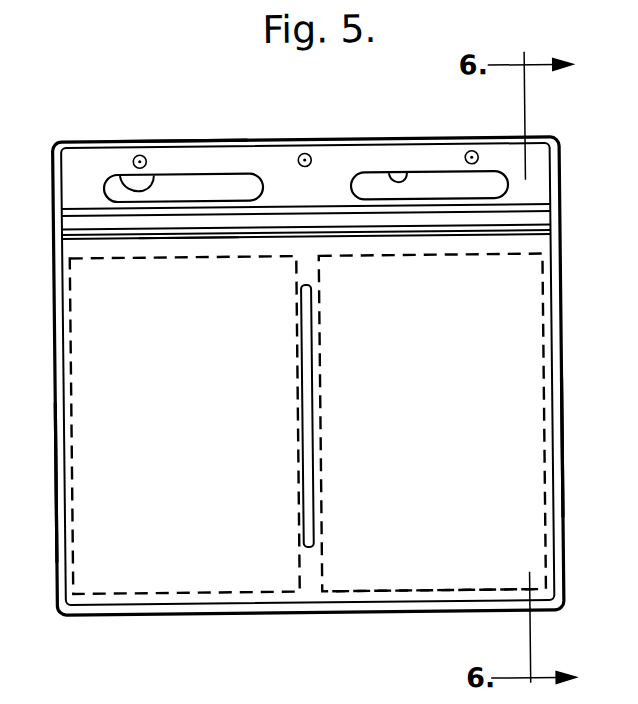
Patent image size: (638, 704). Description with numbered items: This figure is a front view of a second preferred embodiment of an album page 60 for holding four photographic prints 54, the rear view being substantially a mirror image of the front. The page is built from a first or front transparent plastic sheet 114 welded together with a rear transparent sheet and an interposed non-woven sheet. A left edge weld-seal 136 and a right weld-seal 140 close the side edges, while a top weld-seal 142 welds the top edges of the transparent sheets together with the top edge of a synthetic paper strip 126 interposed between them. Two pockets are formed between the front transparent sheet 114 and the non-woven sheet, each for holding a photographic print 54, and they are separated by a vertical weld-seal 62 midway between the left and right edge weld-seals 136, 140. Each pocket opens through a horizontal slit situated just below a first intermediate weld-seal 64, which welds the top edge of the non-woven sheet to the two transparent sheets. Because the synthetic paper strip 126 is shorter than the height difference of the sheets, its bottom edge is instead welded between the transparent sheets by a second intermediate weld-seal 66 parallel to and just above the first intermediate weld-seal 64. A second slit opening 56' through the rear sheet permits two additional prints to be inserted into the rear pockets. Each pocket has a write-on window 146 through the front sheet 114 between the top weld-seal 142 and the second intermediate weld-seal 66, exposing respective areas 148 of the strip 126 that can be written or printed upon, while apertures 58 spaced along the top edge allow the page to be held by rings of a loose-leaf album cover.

The photographic print 54 is at (72, 406).
The second slit opening 56' is at (189, 271).
The apertures 58 is at (145, 153).
The album page 60 is at (570, 164).
The vertical weld-seal 62 is at (312, 458).
The first intermediate weld-seal 64 is at (542, 230).
The second intermediate weld-seal 66 is at (550, 206).
The first transparent sheet 114 is at (430, 510).
The synthetic paper strip 126 is at (72, 173).
The left edge weld-seal 136 is at (56, 500).
The right weld-seal 140 is at (562, 471).
The top weld-seal 142 is at (80, 139).
The window 146 is at (122, 176).
The exposed areas 148 is at (172, 196).